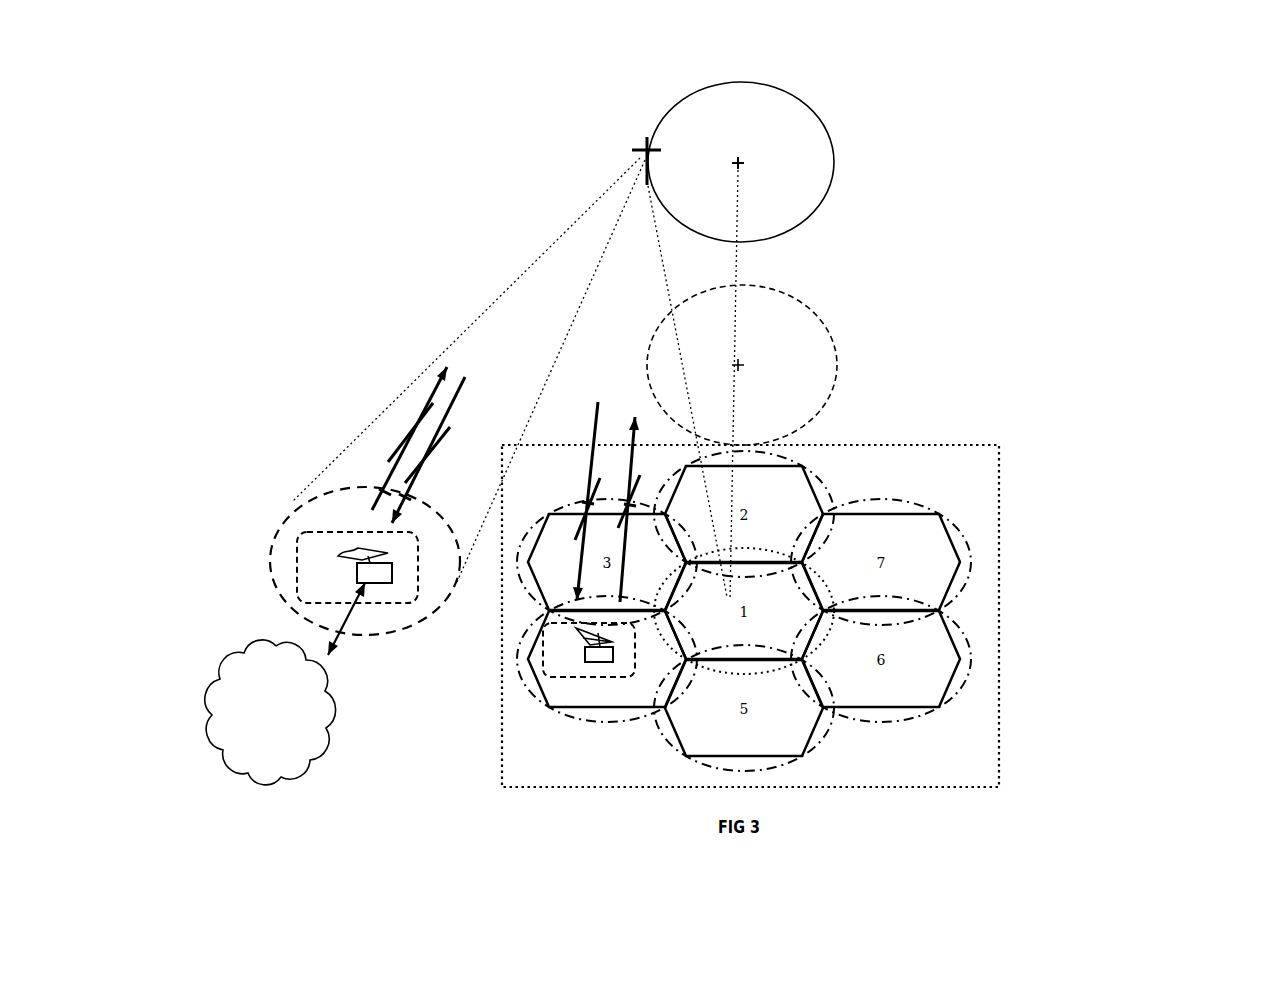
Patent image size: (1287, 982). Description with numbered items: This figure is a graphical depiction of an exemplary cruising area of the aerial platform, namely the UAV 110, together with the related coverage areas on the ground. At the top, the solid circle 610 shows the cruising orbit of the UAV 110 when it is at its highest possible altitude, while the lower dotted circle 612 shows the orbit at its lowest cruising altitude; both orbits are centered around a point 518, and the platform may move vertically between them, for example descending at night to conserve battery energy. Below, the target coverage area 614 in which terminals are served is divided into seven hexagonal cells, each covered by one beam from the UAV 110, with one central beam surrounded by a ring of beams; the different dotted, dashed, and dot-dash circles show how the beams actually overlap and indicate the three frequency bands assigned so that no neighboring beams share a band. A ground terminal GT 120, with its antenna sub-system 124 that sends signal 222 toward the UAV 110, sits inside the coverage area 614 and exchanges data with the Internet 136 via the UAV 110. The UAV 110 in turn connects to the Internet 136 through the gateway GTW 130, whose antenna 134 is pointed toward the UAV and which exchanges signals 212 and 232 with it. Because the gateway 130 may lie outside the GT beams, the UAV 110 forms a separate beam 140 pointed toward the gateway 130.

The unmanned aerial vehicle (UAV) 110 is at (625, 150).
The top solid circle 610 is at (808, 97).
The point 518 is at (745, 163).
The lower dotted circle 612 is at (838, 377).
The target coverage area 614 is at (1000, 578).
The separate beam 140 is at (296, 500).
The Internet Gateway (GTW) 130 is at (297, 568).
The ground gateway antenna 134 is at (348, 555).
The Internet 136 is at (250, 646).
The ground terminal (GT) 120 is at (546, 655).
The ground terminal antenna sub-system 124 is at (580, 637).
The signal 232 is at (406, 438).
The signal 212 is at (496, 488).
The signal 222 is at (634, 509).